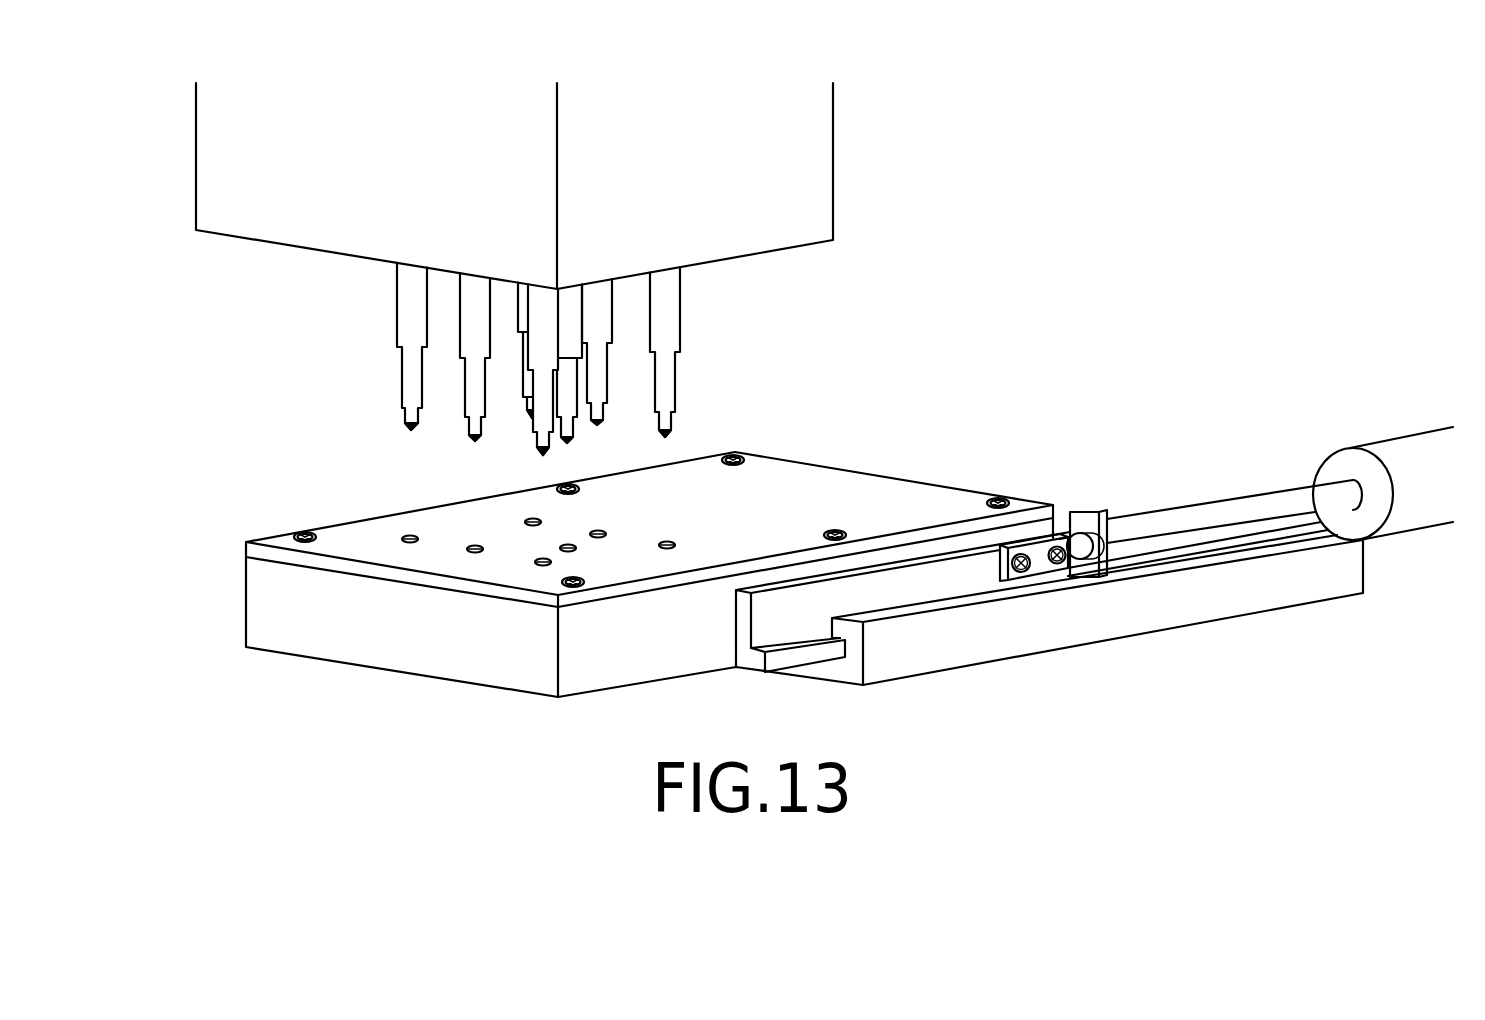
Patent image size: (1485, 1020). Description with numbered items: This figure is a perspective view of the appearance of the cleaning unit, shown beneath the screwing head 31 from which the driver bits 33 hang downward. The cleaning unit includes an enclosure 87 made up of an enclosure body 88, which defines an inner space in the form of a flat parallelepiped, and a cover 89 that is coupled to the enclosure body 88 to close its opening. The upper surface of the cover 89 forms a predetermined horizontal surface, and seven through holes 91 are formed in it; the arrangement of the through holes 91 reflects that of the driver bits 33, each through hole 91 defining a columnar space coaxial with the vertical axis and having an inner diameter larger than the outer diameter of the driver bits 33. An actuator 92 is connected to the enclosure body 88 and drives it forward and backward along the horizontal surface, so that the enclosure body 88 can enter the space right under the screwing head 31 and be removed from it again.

The screwing head 31 is at (833, 203).
The driver bits 33 is at (405, 419).
The enclosure 87 is at (737, 571).
The enclosure body 88 is at (246, 578).
The cover 89 is at (250, 550).
The through holes 91 is at (693, 530).
The actuator 92 is at (1330, 456).